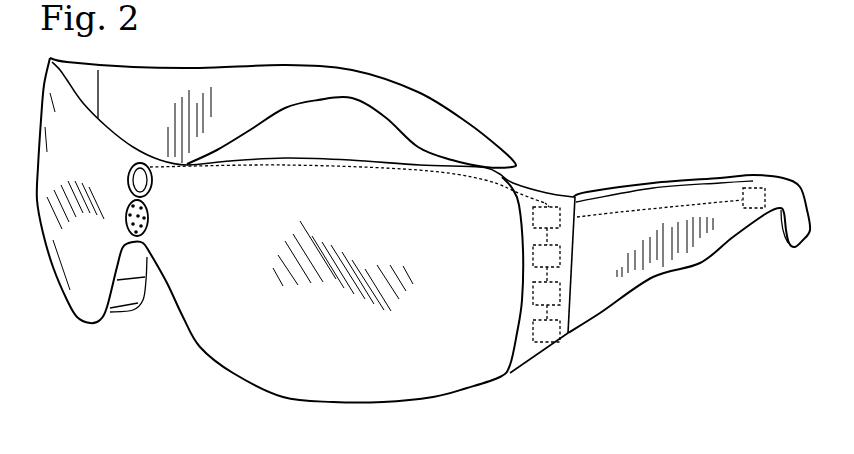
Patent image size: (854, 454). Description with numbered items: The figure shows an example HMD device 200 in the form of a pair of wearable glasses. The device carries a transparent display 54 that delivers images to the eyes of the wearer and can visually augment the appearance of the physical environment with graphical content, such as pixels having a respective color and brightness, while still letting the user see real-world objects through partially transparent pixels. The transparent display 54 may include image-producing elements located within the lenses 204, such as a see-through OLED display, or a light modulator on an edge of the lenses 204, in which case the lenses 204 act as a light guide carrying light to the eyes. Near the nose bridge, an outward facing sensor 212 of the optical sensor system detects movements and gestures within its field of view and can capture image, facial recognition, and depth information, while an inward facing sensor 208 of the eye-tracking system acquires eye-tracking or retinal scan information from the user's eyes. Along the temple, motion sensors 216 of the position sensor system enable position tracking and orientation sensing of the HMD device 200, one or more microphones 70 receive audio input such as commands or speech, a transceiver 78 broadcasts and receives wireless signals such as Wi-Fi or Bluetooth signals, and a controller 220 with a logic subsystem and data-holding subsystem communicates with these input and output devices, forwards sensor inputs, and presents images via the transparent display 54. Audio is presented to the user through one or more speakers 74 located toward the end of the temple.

The HMD device 200 is at (505, 62).
The transparent display 54 is at (222, 342).
The lenses 204 is at (87, 298).
The outward facing sensor 212 is at (134, 178).
The inward facing sensor 208 is at (125, 228).
The motion sensors 216 is at (557, 194).
The speakers 74 is at (750, 182).
The microphones 70 is at (570, 247).
The transceiver 78 is at (568, 293).
The controller 220 is at (567, 333).